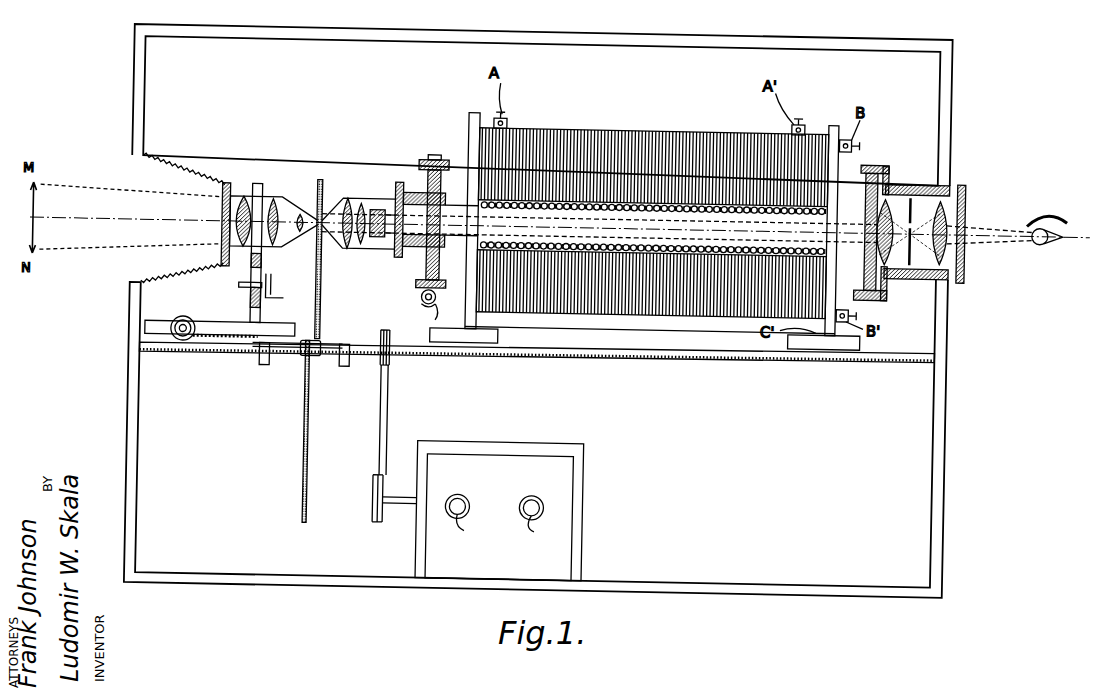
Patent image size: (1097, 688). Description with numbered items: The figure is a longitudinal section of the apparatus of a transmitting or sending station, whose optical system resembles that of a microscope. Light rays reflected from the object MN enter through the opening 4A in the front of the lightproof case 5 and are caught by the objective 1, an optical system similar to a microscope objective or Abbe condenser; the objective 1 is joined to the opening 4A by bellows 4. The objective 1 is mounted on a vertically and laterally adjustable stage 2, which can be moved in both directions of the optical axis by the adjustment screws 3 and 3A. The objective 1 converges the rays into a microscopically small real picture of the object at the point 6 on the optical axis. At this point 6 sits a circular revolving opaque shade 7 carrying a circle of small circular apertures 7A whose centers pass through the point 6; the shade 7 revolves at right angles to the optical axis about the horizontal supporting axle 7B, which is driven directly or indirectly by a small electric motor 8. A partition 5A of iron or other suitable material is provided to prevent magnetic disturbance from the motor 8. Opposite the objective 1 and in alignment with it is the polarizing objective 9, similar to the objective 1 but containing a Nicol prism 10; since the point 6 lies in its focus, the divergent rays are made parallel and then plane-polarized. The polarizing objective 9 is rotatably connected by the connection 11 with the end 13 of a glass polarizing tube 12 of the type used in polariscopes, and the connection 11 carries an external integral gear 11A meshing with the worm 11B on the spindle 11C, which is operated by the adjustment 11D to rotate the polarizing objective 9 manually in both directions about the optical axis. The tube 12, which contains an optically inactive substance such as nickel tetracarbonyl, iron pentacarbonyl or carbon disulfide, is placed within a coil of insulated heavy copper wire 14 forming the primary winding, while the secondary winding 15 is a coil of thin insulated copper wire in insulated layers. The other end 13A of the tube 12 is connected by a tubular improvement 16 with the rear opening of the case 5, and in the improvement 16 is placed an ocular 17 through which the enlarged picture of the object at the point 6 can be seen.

The objective 1 is at (240, 192).
The stage 2 is at (250, 300).
The adjustment screw 3 is at (180, 314).
The adjustment screw 3A is at (271, 288).
The bellows 4 is at (192, 164).
The opening 4A is at (148, 168).
The lightproof case 5 is at (131, 78).
The partition 5A is at (600, 347).
The point 6 is at (313, 202).
The revolving opaque shade 7 is at (318, 172).
The small circular apertures 7A is at (316, 238).
The horizontal supporting axle 7B is at (318, 338).
The electric motor 8 is at (487, 462).
The polarizing objective 9 is at (350, 192).
The Nicol prism 10 is at (375, 237).
The connection 11 is at (418, 163).
The external integral gear 11A is at (433, 150).
The worm 11B is at (423, 290).
The spindle 11C is at (420, 303).
The adjustment 11D is at (437, 300).
The glass polarizing tube 12 is at (612, 212).
The end of polarizing tube 13 is at (463, 172).
The end of polarizing tube 13A is at (863, 168).
The coil of insulated heavy copper wire 14 is at (630, 192).
The secondary winding 15 is at (722, 147).
The tubular improvement 16 is at (885, 164).
The ocular 17 is at (966, 245).